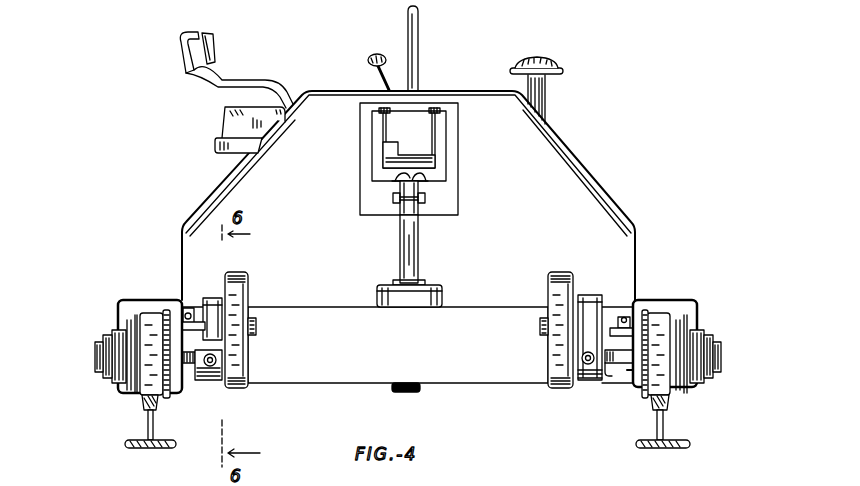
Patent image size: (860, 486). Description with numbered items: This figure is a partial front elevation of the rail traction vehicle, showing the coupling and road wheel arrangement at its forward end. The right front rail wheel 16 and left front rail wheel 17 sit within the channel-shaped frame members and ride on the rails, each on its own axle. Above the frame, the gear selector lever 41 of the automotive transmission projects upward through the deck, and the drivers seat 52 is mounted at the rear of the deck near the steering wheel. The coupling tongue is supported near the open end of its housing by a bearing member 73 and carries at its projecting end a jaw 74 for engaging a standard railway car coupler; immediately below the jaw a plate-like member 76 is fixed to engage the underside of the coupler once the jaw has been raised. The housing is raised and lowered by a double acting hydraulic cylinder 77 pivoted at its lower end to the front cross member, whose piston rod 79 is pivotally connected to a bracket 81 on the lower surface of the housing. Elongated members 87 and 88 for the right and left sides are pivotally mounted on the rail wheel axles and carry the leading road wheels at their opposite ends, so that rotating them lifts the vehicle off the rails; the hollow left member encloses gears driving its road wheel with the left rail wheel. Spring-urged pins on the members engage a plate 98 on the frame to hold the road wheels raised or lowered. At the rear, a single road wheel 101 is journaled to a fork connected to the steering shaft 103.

The right front rail wheel 16 is at (153, 385).
The left front rail wheel 17 is at (665, 315).
The gear selector lever 41 is at (380, 78).
The drivers seat 52 is at (230, 82).
The bearing member 73 is at (383, 178).
The jaw 74 is at (392, 127).
The member 76 is at (425, 153).
The double acting hydraulic cylinder 77 is at (442, 292).
The piston rod 79 is at (418, 245).
The bracket 81 is at (422, 193).
The elongated member 87 is at (213, 300).
The elongated member 88 is at (595, 297).
The plate 98 is at (190, 310).
The single road wheel 101 is at (420, 388).
The shaft 103 is at (420, 37).